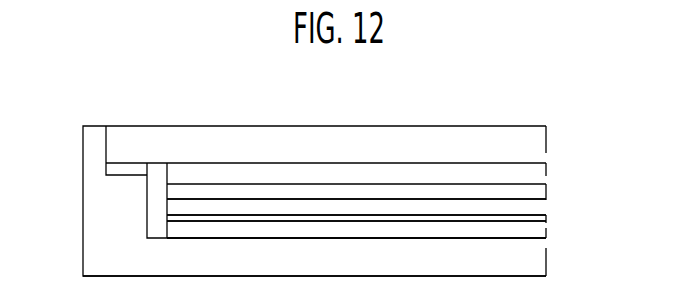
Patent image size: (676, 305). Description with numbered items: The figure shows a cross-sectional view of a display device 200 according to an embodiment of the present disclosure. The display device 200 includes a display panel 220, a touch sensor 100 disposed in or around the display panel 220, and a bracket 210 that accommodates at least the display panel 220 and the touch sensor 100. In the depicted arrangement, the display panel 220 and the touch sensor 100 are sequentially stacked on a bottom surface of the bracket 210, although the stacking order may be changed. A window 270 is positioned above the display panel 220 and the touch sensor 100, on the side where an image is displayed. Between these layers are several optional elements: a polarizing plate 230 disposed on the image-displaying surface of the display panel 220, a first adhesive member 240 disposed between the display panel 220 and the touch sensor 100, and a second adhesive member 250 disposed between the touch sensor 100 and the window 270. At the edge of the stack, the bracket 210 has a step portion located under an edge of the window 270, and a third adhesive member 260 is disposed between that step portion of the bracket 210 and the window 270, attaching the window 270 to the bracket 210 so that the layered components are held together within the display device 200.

The display device 200 is at (448, 107).
The window 270 is at (546, 138).
The third adhesive member 260 is at (112, 166).
The second adhesive member 250 is at (546, 175).
The touch sensor 100 is at (546, 191).
The first adhesive member 240 is at (546, 207).
The polarizing plate 230 is at (546, 217).
The display panel 220 is at (546, 230).
The bracket 210 is at (546, 258).